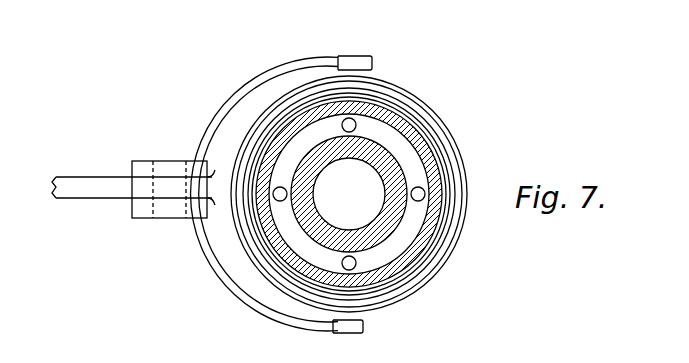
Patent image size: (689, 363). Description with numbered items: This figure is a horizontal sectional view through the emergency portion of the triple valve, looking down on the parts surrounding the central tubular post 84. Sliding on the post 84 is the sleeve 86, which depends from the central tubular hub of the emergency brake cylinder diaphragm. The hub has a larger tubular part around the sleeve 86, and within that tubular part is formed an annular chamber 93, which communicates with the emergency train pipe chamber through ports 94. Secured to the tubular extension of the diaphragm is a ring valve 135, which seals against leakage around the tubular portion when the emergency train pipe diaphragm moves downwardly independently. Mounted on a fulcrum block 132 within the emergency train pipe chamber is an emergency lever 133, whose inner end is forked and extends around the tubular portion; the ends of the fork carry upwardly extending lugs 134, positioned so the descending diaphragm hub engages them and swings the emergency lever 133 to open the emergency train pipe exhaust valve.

The tubular post 84 is at (322, 184).
The sleeve 86 is at (448, 163).
The annular chamber 93 is at (421, 125).
The ports 94 is at (451, 236).
The fulcrum block 132 is at (172, 172).
The emergency lever 133 is at (93, 190).
The lugs 134 is at (382, 325).
The ring valve 135 is at (458, 172).